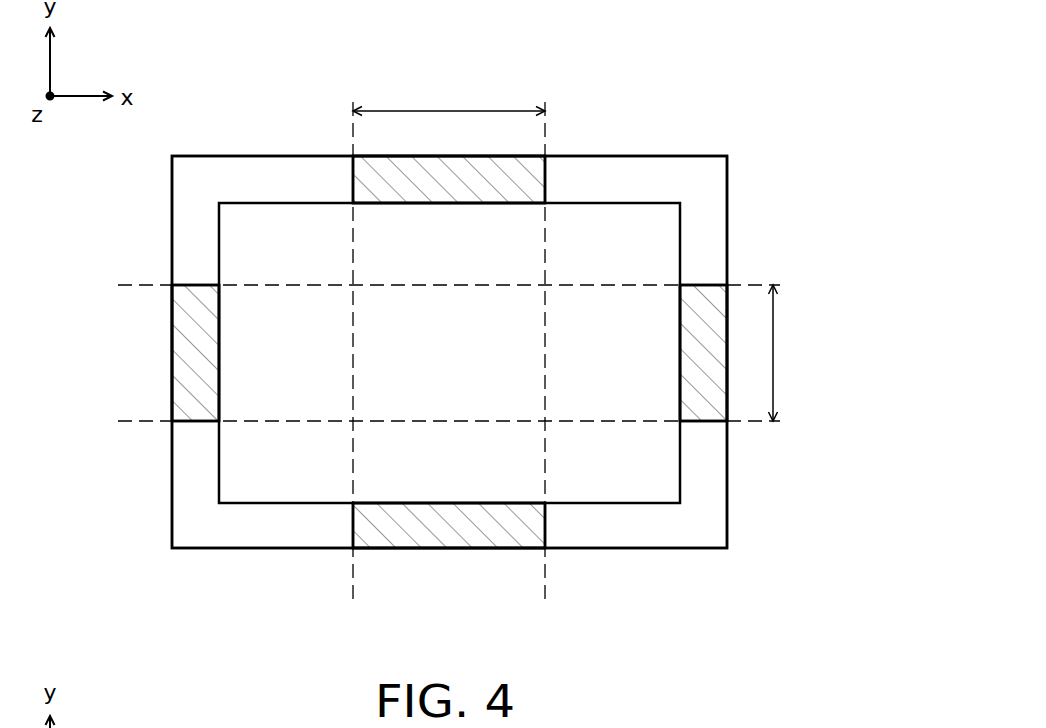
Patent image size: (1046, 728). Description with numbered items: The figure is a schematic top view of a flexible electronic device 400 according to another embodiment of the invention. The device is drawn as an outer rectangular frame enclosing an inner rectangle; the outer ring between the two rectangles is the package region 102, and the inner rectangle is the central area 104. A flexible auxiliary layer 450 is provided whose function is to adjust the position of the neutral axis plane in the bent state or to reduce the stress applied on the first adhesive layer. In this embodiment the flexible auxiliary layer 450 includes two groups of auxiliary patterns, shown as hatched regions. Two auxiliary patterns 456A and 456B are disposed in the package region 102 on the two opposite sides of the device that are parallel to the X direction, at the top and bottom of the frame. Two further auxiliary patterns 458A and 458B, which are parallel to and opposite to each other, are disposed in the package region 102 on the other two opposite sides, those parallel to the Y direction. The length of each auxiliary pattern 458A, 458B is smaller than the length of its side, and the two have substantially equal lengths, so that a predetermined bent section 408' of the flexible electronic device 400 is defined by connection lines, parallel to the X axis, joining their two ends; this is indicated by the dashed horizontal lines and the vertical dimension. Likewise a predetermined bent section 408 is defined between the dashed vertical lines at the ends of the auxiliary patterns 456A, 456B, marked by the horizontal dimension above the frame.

The flexible electronic device 400 is at (825, 628).
The package region 102 is at (700, 217).
The inner region / die area 104 is at (652, 260).
The flexible auxiliary layer 450 is at (449, 352).
The auxiliary pattern 456A is at (513, 185).
The auxiliary pattern 456B is at (448, 528).
The auxiliary pattern 458A is at (188, 363).
The auxiliary pattern 458B is at (702, 400).
The predetermined bent section 408 is at (449, 93).
The predetermined bent section 408' is at (801, 353).